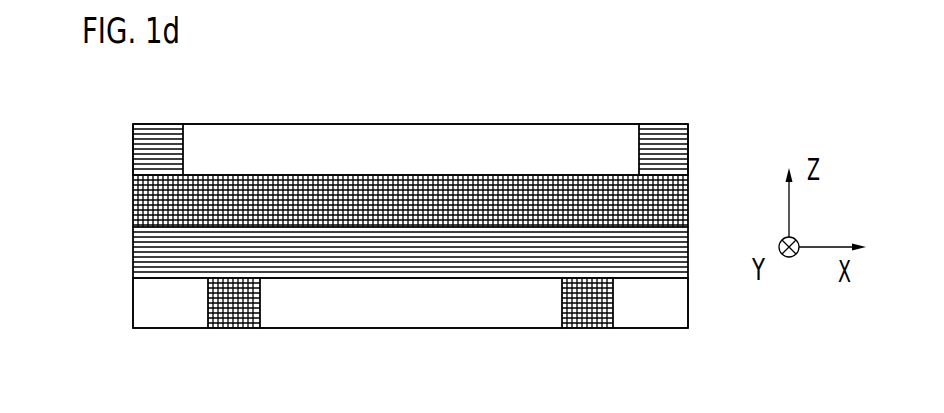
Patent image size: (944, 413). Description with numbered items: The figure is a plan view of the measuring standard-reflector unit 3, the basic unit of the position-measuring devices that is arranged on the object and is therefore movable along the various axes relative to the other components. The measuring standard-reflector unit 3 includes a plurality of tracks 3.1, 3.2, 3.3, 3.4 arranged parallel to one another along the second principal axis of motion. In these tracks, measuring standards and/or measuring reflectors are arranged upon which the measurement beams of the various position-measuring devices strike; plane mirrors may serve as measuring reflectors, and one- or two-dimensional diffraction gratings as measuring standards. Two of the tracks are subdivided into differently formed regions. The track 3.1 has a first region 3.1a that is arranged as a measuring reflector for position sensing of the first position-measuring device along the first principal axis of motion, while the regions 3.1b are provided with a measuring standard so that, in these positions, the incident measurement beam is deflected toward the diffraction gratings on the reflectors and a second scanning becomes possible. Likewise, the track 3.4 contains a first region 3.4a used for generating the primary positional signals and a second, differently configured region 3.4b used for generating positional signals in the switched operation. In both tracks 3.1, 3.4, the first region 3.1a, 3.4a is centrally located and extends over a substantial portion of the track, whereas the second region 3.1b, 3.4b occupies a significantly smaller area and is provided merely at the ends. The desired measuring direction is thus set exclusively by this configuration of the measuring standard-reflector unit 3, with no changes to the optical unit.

The measuring standard-reflector unit 3 is at (580, 105).
The track 3.1 is at (116, 302).
The region 3.1a is at (178, 310).
The region 3.1b is at (235, 312).
The track 3.2 is at (116, 254).
The track 3.3 is at (116, 203).
The track 3.4 is at (116, 150).
The region 3.4a is at (461, 148).
The region 3.4b is at (163, 142).